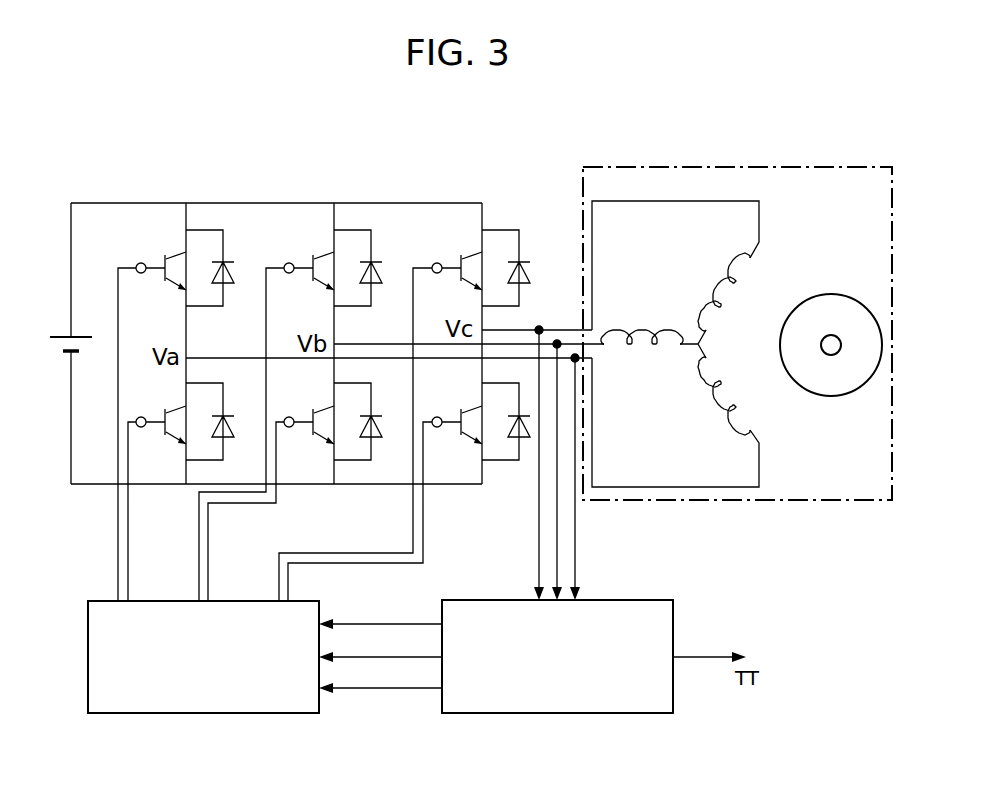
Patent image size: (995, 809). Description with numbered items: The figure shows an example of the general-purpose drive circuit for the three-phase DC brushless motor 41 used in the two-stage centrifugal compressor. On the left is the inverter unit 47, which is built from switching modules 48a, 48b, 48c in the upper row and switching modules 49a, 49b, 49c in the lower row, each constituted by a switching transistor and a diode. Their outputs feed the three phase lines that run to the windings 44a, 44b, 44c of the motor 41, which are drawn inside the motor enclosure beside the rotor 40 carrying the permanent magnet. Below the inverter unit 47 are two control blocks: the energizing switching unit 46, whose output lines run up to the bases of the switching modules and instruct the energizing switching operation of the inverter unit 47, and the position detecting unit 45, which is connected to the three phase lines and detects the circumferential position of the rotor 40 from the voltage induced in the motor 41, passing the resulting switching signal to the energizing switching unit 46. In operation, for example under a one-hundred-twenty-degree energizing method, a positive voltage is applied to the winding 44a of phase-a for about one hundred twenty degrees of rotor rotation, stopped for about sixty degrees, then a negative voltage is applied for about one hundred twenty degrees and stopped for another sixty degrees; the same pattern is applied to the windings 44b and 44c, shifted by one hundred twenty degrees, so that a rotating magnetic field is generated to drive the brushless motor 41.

The rotor 40 is at (828, 398).
The brushless motor 41 is at (797, 502).
The winding of phase-a 44a is at (724, 412).
The winding of phase-b 44b is at (633, 356).
The winding of phase-c 44c is at (718, 290).
The position detecting unit 45 is at (673, 628).
The energizing switching unit 46 is at (88, 630).
The inverter unit 47 is at (216, 184).
The switching module 48a is at (155, 262).
The switching module 48b is at (304, 262).
The switching module 48c is at (452, 262).
The switching module 49a is at (152, 433).
The switching module 49b is at (300, 433).
The switching module 49c is at (449, 433).